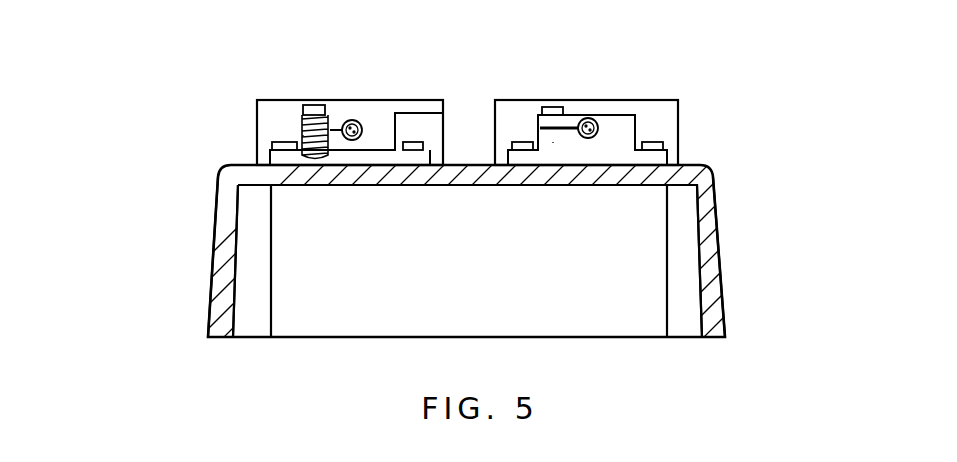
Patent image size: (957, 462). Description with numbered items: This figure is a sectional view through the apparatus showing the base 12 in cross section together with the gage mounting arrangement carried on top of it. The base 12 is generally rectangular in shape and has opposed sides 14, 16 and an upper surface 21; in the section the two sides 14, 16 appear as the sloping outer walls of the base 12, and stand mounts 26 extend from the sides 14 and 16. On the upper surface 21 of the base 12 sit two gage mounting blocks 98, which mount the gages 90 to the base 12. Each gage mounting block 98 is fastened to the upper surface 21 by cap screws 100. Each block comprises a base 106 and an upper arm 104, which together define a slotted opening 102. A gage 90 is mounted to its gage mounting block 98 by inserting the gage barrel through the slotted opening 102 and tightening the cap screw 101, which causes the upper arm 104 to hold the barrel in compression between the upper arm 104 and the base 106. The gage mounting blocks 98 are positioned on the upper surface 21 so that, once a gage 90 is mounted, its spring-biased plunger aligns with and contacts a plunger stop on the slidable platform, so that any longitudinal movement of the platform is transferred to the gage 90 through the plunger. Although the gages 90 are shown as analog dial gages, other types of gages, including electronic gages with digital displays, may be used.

The base 12 is at (468, 164).
The side 14 is at (212, 277).
The side 16 is at (718, 230).
The upper surface 21 is at (453, 163).
The stand mounts 26 is at (271, 255).
The gages 90 is at (395, 100).
The gage mounting blocks 98 is at (383, 112).
The cap screws 100 is at (277, 143).
The cap screw 101 is at (308, 103).
The slotted opening 102 is at (353, 120).
The upper arm 104 is at (302, 118).
The base 106 is at (303, 135).